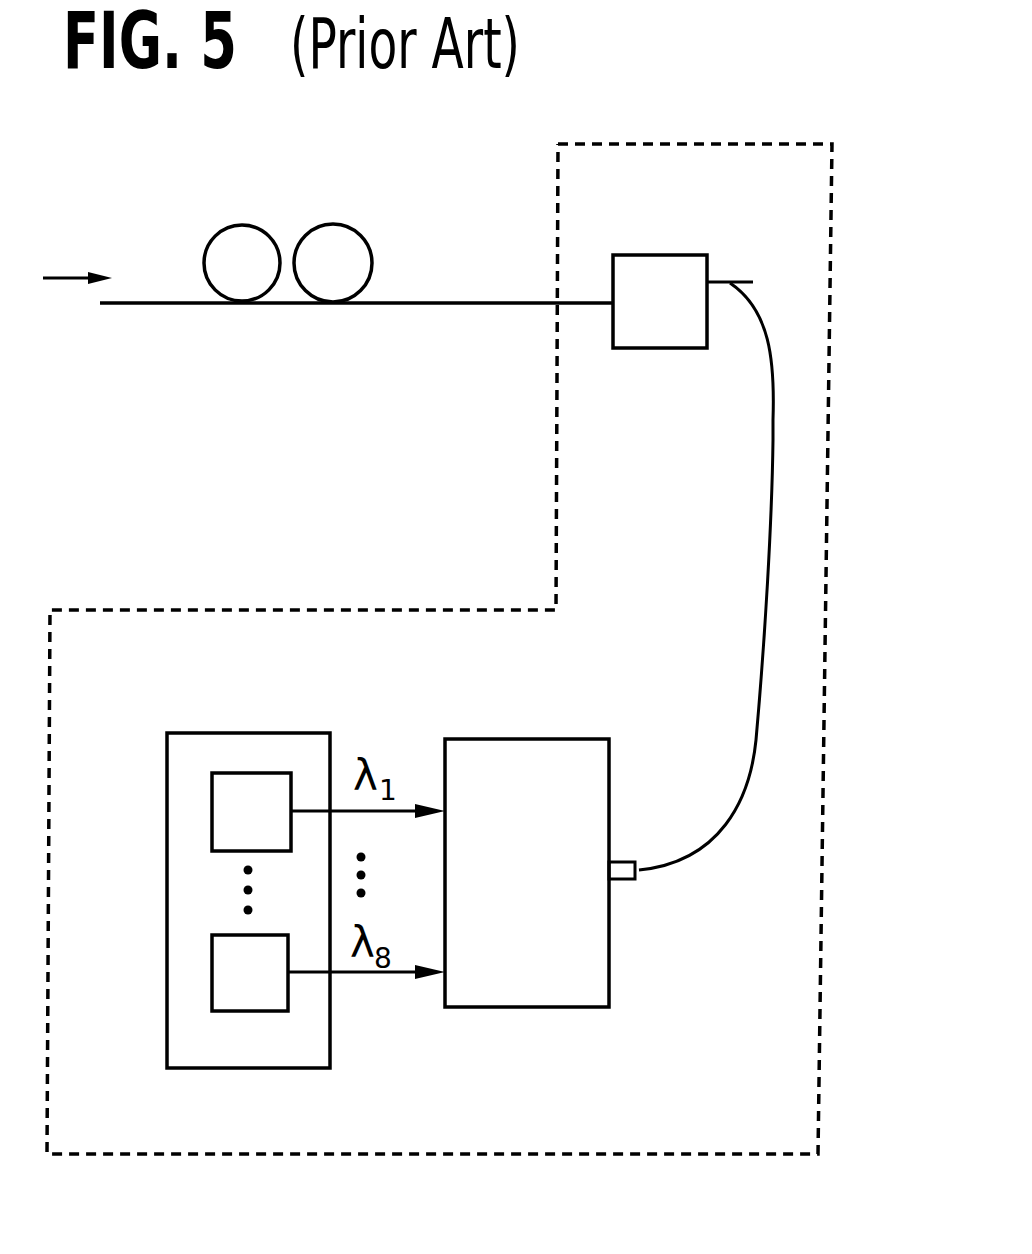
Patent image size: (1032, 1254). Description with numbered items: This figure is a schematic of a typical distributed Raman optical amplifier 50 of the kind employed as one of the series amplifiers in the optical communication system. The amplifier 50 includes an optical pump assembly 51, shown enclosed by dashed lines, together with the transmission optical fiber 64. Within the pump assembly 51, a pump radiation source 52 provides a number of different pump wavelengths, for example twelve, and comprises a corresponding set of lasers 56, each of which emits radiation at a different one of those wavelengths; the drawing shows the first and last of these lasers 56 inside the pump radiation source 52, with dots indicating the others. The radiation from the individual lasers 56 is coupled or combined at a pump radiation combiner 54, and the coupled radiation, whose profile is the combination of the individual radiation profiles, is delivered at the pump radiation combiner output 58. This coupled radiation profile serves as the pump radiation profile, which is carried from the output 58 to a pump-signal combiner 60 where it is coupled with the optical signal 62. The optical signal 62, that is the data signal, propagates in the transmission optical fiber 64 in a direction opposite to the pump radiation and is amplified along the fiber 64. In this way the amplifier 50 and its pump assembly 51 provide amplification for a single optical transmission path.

The distributed Raman optical amplifier 50 is at (926, 310).
The optical pump assembly 51 is at (585, 1157).
The pump radiation source 52 is at (270, 733).
The pump radiation combiner 54 is at (579, 739).
The lasers 56 is at (212, 816).
The pump radiation combiner output 58 is at (627, 862).
The pump-signal combiner 60 is at (647, 255).
The optical signal 62 is at (56, 278).
The transmission optical fiber 64 is at (363, 237).